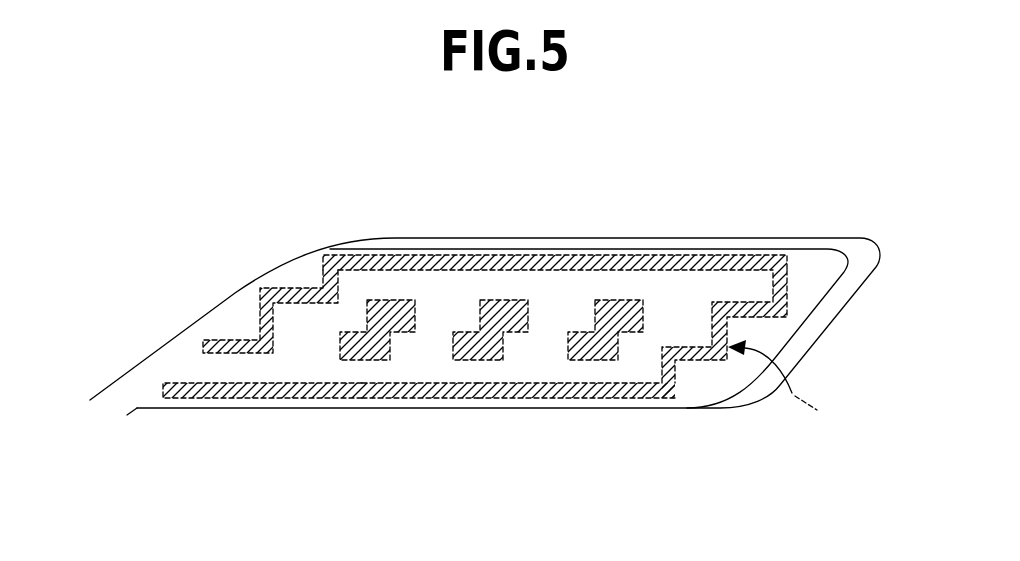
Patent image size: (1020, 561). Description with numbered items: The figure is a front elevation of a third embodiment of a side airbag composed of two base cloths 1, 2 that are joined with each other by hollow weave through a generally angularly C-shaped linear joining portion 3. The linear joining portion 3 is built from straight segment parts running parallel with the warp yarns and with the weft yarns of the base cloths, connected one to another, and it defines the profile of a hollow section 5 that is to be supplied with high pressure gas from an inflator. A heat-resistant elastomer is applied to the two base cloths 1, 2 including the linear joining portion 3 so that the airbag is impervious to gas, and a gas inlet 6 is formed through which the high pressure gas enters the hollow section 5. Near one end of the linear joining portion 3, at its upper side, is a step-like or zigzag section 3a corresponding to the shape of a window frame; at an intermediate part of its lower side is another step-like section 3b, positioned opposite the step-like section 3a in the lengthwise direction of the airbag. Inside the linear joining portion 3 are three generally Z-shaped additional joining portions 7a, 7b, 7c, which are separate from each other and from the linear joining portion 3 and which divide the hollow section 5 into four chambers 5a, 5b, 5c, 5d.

The base cloth 1 is at (782, 249).
The base cloth 2 is at (690, 240).
The linear joining portion 3 is at (785, 387).
The step-like section 3a is at (290, 288).
The step-like section 3b is at (697, 358).
The hollow section 5 is at (447, 287).
The chamber 5a is at (303, 363).
The chamber 5b is at (427, 363).
The chamber 5c is at (532, 363).
The chamber 5d is at (643, 367).
The gas inlet 6 is at (115, 400).
The additional joining portion 7a is at (363, 357).
The additional joining portion 7b is at (478, 357).
The additional joining portion 7c is at (590, 357).